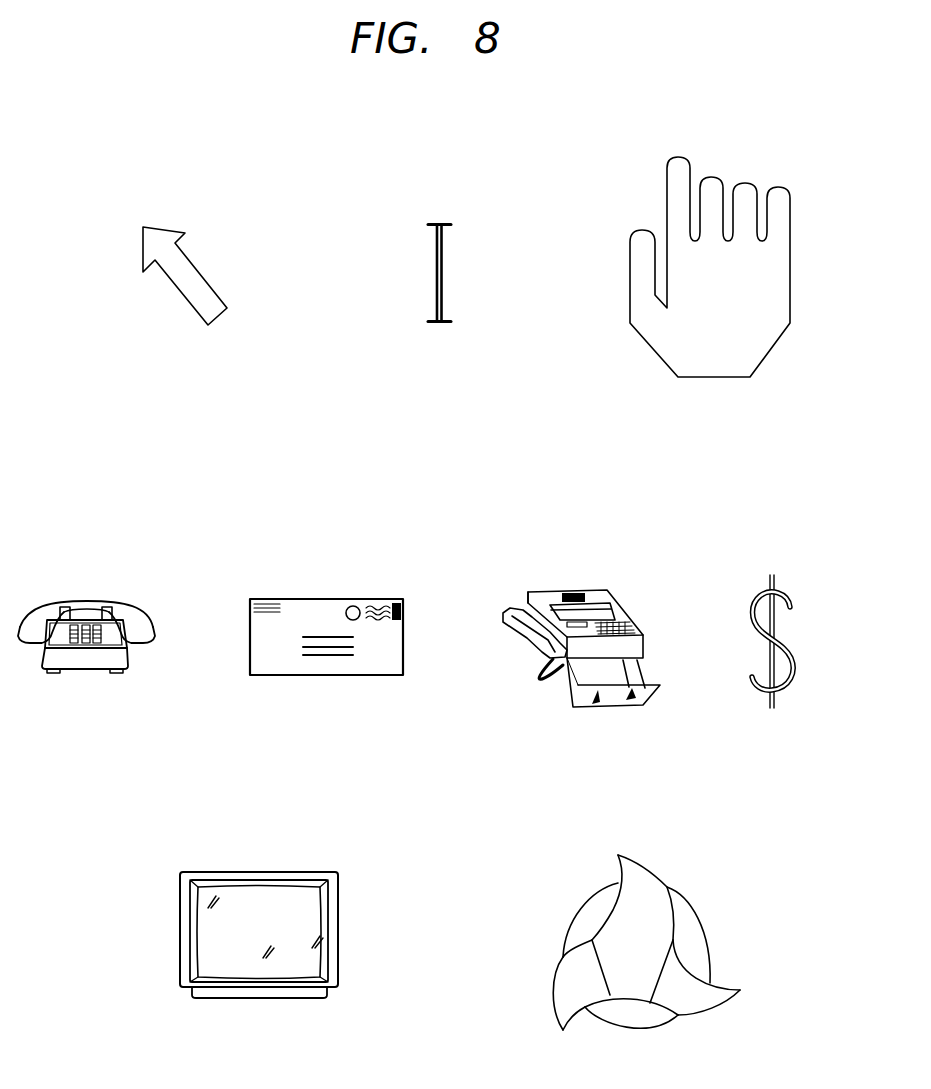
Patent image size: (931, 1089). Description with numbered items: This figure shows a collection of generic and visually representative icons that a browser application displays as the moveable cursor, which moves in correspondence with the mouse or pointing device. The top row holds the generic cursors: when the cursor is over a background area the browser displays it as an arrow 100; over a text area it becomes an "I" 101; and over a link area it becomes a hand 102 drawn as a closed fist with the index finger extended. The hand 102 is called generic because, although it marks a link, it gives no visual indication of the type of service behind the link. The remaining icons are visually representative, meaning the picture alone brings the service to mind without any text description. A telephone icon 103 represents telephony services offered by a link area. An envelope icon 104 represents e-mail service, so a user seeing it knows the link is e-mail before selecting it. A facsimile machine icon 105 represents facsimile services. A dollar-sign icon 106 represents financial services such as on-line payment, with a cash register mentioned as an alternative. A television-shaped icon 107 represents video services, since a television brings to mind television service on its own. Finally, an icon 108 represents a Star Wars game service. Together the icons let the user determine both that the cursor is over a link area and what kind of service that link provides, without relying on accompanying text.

The arrow cursor 100 is at (179, 291).
The "I" cursor 101 is at (437, 276).
The hand icon 102 is at (793, 265).
The telephone icon 103 is at (87, 600).
The envelope icon 104 is at (327, 598).
The facsimile machine icon 105 is at (570, 592).
The $ icon 106 is at (790, 595).
The video services icon 107 is at (260, 871).
The Star Wars game service icon 108 is at (712, 947).